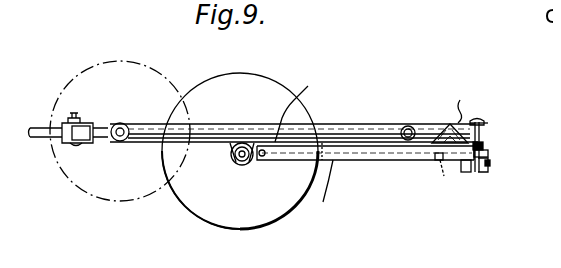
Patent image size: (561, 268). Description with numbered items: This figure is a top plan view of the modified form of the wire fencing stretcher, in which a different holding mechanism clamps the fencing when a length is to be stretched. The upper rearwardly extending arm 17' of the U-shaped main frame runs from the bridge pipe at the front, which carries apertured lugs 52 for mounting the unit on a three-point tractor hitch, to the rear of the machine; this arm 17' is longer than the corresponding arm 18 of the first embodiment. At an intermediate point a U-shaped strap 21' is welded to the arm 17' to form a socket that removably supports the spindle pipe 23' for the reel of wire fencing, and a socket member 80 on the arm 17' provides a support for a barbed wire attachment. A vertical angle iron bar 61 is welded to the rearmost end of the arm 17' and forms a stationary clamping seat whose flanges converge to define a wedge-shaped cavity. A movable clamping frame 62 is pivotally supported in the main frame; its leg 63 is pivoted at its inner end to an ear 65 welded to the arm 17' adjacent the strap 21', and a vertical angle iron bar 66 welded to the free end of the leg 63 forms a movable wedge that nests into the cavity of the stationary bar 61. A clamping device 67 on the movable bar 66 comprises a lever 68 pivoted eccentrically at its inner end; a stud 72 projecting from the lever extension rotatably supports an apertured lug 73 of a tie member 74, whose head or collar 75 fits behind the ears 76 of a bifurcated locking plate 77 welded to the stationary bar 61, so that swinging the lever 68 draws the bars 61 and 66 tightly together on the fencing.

The apertured lugs 52 is at (87, 121).
The ears 65 is at (302, 104).
The arm 17' is at (294, 113).
The socket member 80 is at (408, 126).
The vertical angle iron bar 61 is at (445, 124).
The bifurcated locking plate 77 is at (462, 102).
The head or collar 75 is at (478, 119).
The ears 76 is at (488, 122).
The tie member 74 is at (484, 132).
The apertured lug 73 is at (488, 153).
The clamping device 67 is at (491, 159).
The stud 72 is at (484, 166).
The lever 68 is at (465, 172).
The vertical angle iron bar 66 is at (437, 174).
The movable clamping frame 62 is at (378, 163).
The leg 63 is at (321, 186).
The arm 18 is at (282, 227).
The U-shaped strap 21' is at (263, 175).
The spindle pipe 23' is at (226, 166).